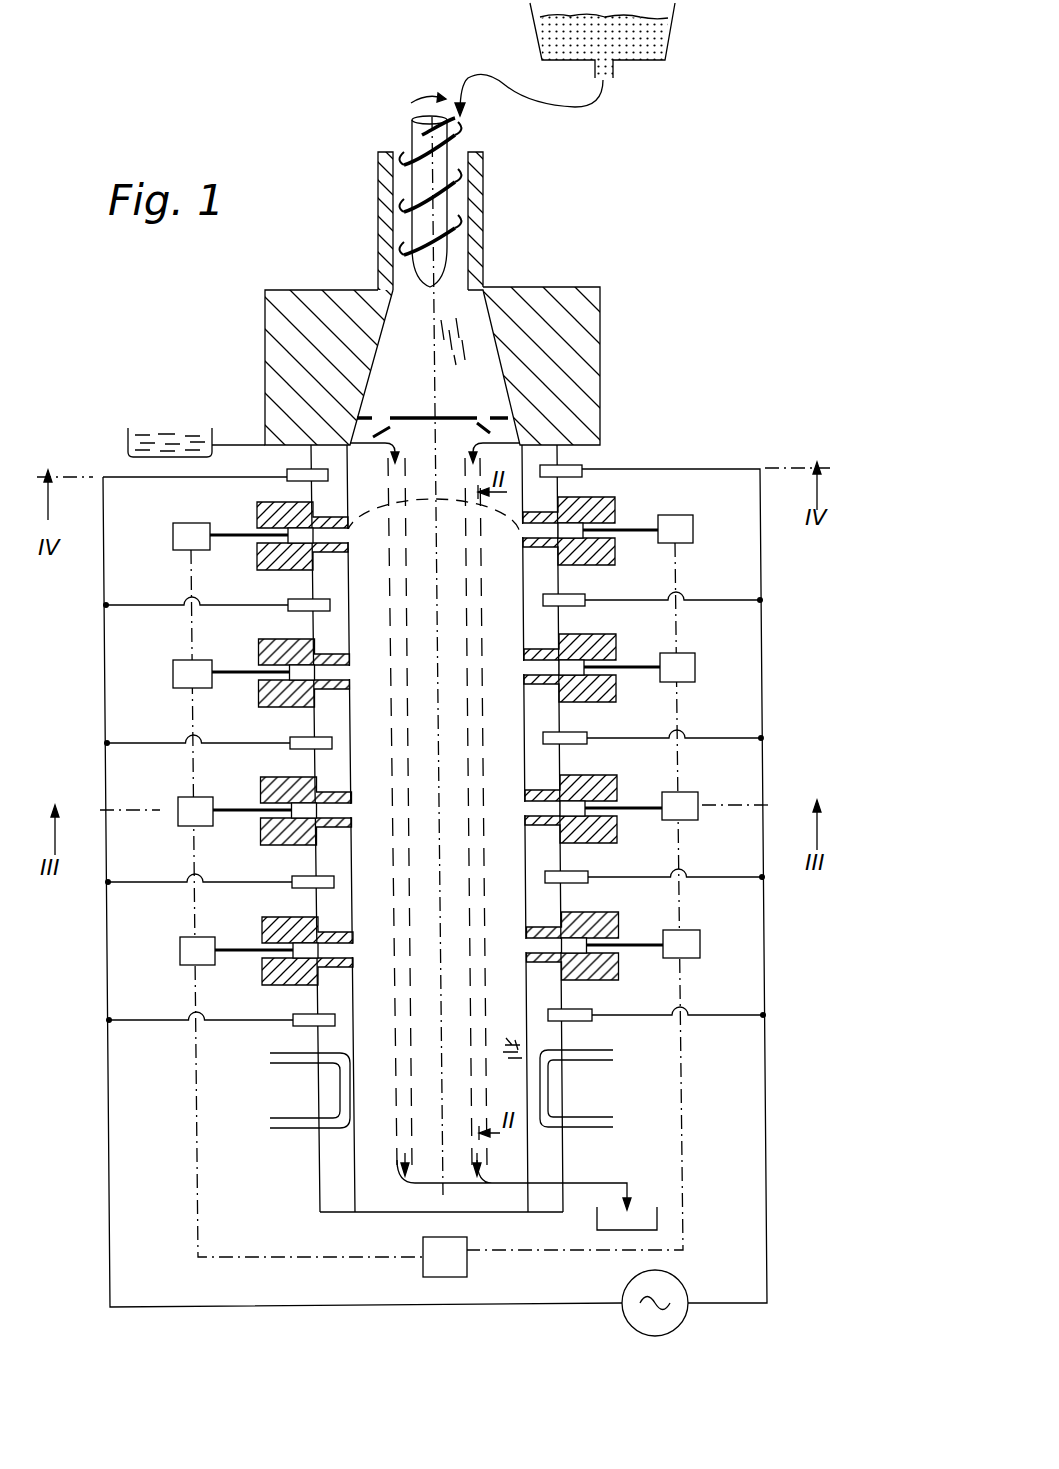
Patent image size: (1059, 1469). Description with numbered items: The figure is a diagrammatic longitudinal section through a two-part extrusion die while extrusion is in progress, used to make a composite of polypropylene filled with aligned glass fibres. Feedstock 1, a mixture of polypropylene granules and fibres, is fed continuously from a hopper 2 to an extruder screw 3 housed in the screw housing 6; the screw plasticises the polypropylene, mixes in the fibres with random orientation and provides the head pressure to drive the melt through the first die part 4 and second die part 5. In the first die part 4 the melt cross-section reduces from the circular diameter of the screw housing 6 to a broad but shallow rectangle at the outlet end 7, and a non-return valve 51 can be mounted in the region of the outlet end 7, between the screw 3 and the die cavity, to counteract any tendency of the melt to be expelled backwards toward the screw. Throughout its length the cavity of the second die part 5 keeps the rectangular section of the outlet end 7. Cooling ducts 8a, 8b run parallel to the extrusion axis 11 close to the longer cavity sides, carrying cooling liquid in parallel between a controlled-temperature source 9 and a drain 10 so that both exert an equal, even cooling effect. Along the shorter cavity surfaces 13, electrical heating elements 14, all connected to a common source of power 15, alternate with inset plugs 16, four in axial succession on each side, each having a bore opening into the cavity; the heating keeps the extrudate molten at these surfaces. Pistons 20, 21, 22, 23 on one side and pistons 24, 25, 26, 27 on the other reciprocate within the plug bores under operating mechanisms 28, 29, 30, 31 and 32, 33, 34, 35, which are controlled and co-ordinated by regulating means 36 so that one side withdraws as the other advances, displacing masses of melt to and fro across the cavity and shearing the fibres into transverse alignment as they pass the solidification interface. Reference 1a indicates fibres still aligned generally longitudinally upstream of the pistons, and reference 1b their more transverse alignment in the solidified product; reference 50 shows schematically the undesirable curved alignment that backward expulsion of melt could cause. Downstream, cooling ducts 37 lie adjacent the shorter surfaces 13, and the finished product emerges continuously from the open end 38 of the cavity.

The feedstock 1 is at (628, 28).
The longitudinally aligned glass fibres 1a is at (460, 323).
The transversely aligned glass fibres 1b is at (510, 1040).
The hopper 2 is at (673, 18).
The extruder screw 3 is at (423, 228).
The first die part 4 is at (602, 360).
The second die part 5 is at (312, 1183).
The screw housing 6 is at (485, 227).
The outlet end 7 is at (500, 446).
The cooling duct 8a is at (407, 878).
The cooling duct 8b is at (468, 890).
The controlled-temperature source 9 is at (128, 437).
The drain 10 is at (657, 1210).
The extrusion axis 11 is at (432, 383).
The shorter die cavity surfaces 13 is at (521, 654).
The electrical heating elements 14 is at (330, 473).
The common source of power 15 is at (630, 1283).
The inset plugs 16 is at (538, 510).
The piston 20 is at (298, 532).
The piston 21 is at (300, 673).
The piston 22 is at (307, 808).
The piston 23 is at (305, 947).
The piston 24 is at (572, 535).
The piston 25 is at (570, 670).
The piston 26 is at (573, 808).
The piston 27 is at (575, 947).
The operating mechanism 28 is at (173, 535).
The operating mechanism 29 is at (173, 675).
The operating mechanism 30 is at (178, 808).
The operating mechanism 31 is at (180, 950).
The operating mechanism 32 is at (693, 528).
The operating mechanism 33 is at (695, 665).
The operating mechanism 34 is at (698, 795).
The operating mechanism 35 is at (700, 945).
The regulating means 36 is at (467, 1267).
The cooling ducts 37 is at (303, 1130).
The open end 38 is at (397, 1224).
The curved transverse alignment 50 is at (386, 538).
The non-return valve 51 is at (453, 415).